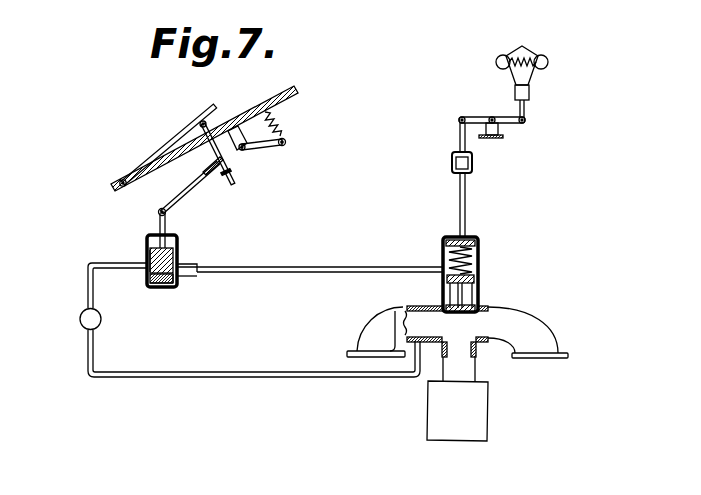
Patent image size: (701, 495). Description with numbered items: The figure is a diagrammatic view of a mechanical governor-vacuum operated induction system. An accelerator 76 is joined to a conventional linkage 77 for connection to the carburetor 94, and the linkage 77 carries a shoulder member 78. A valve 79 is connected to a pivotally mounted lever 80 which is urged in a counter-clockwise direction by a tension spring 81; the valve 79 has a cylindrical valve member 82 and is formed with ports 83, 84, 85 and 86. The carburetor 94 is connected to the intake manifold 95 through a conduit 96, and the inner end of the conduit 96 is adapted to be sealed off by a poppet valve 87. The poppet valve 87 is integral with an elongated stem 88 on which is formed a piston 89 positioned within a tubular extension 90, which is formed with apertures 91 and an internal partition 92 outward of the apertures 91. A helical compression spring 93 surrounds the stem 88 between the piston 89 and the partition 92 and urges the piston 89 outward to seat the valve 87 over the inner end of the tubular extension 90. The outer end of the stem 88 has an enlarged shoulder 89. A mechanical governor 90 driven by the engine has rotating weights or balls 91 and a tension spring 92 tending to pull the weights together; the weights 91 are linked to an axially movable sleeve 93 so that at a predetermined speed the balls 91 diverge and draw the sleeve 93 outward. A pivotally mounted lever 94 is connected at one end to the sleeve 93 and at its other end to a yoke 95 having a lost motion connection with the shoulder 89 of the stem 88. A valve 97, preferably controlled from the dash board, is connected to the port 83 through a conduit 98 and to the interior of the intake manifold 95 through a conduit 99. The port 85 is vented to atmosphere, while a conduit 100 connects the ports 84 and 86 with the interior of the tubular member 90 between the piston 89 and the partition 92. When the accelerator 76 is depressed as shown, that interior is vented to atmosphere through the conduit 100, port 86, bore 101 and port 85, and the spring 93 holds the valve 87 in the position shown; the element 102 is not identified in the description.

The accelerator 76 is at (182, 133).
The linkage 77 is at (238, 185).
The shoulder member 78 is at (233, 171).
The valve 79 is at (178, 238).
The pivotally mounted lever 80 is at (195, 186).
The tension spring 81 is at (280, 124).
The cylindrical valve member 82 is at (176, 252).
The port 83 is at (150, 257).
The port 84 is at (177, 265).
The port 85 is at (152, 283).
The port 86 is at (176, 283).
The poppet valve 87 is at (478, 321).
The elongated stem 88 is at (465, 218).
The piston 89 is at (480, 245).
The tubular extension 90 is at (536, 75).
The apertures 91 is at (497, 55).
The internal partition 92 is at (523, 47).
The helical compression spring 93 is at (530, 95).
The carburetor 94 is at (510, 128).
The intake manifold 95 is at (459, 140).
The conduit 96 is at (476, 365).
The valve 97 is at (83, 325).
The conduit 98 is at (108, 262).
The conduit 99 is at (245, 378).
The conduit 100 is at (271, 273).
The bore 101 is at (158, 286).
The block 102 is at (472, 166).